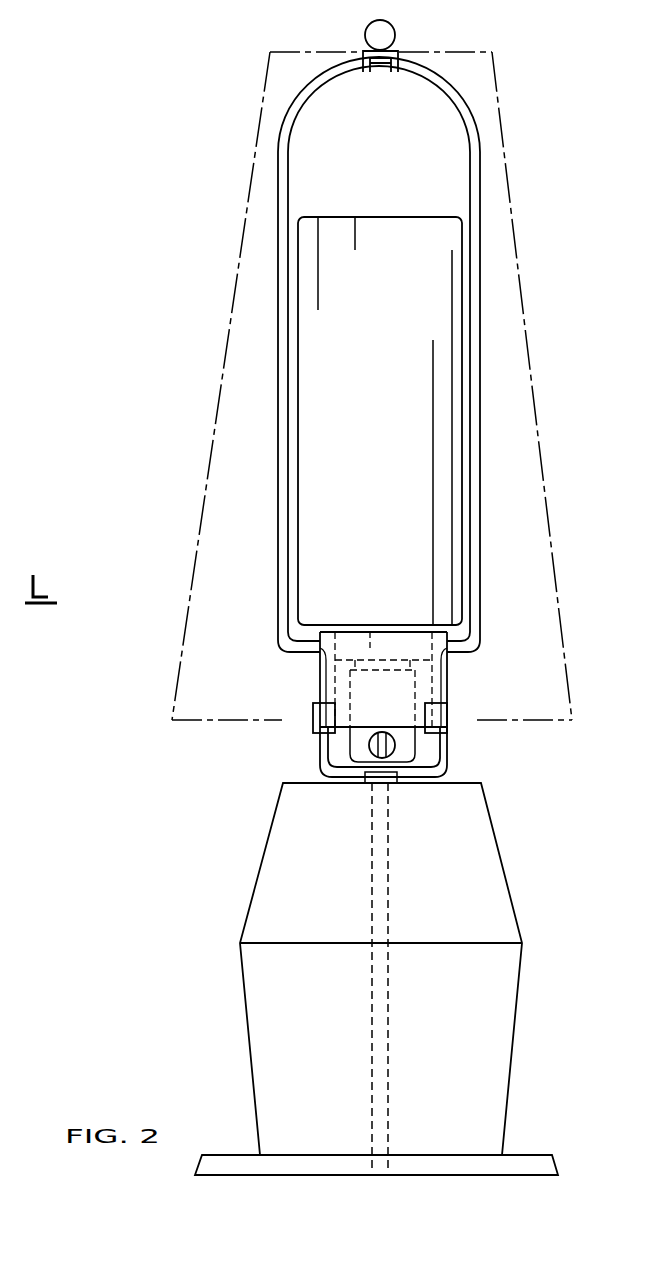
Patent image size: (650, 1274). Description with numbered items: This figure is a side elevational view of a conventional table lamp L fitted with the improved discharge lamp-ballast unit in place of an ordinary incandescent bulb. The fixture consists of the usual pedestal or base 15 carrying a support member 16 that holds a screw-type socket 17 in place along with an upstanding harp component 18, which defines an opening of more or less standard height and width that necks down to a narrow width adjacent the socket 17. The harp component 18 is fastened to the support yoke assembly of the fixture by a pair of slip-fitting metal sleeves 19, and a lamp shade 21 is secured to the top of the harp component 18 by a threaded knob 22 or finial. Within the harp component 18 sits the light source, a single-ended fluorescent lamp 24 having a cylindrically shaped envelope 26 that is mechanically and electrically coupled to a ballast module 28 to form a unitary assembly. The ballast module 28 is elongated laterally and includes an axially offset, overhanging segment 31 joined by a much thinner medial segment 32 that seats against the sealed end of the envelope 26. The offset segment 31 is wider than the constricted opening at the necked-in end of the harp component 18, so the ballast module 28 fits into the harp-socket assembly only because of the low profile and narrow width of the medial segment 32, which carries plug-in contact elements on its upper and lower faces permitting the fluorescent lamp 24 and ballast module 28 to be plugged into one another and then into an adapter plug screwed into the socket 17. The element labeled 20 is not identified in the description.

The base 15 is at (493, 881).
The support member 16 is at (372, 1030).
The screw-type socket 17 is at (403, 755).
The harp component 18 is at (477, 163).
The slip-fitting metal sleeves 19 is at (318, 731).
The screw 20 is at (378, 745).
The lamp shade 21 is at (212, 450).
The threaded knob 22 is at (387, 33).
The single-ended fluorescent lamp 24 is at (417, 363).
The envelope 26 is at (445, 435).
The ballast module 28 is at (446, 670).
The offset segment 31 is at (340, 682).
The medial segment 32 is at (370, 632).